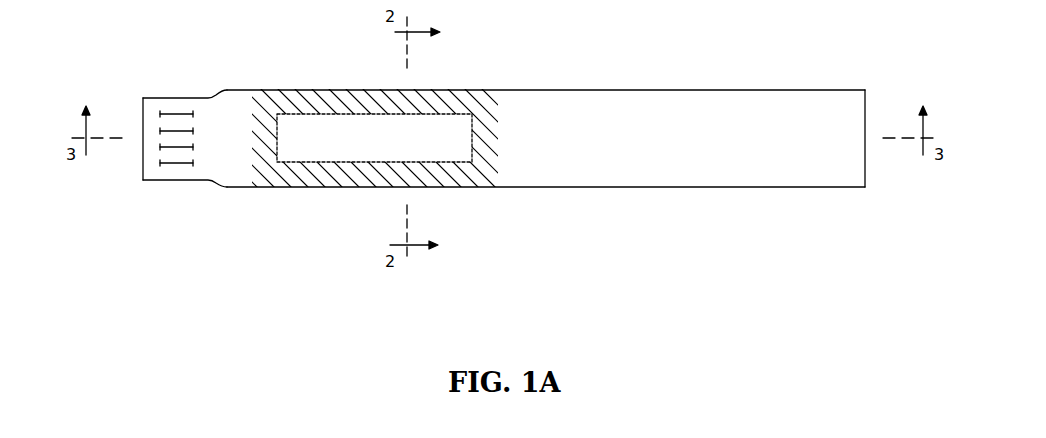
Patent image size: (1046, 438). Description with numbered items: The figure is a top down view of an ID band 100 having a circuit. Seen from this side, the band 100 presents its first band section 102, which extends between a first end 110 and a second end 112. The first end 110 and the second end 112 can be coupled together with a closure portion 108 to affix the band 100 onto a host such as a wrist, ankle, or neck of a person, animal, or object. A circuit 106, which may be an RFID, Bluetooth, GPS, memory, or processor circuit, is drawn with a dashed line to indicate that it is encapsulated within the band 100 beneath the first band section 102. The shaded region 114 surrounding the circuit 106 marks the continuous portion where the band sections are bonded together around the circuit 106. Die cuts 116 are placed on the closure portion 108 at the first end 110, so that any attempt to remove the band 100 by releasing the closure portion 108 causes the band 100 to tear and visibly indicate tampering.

The band 100 is at (506, 170).
The first band section 102 is at (667, 123).
The circuit 106 is at (355, 166).
The closure portion 108 is at (227, 73).
The first end 110 is at (142, 179).
The second end 112 is at (868, 177).
The shaded region 114 is at (352, 92).
The die cuts 116 is at (175, 165).